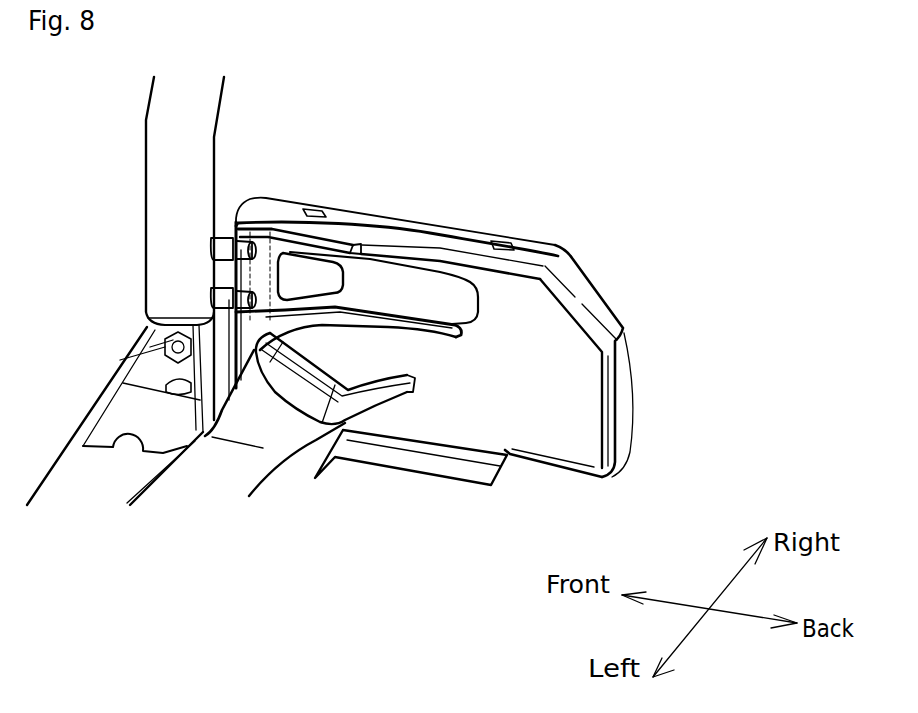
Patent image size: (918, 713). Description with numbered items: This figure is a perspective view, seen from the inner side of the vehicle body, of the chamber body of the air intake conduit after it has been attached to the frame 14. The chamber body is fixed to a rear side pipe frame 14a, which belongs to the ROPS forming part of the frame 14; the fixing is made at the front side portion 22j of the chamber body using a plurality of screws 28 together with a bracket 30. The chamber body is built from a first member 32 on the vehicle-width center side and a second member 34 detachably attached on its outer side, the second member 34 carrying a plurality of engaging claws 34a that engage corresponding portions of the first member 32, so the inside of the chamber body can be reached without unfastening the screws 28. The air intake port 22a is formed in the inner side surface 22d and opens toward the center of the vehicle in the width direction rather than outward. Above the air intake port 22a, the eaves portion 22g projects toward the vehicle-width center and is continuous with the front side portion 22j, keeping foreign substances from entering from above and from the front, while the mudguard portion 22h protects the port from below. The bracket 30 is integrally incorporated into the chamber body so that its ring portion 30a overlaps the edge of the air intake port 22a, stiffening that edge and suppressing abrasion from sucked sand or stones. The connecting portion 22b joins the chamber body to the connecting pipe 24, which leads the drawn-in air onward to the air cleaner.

The frame 14 is at (75, 463).
The rear side pipe frame 14a is at (147, 174).
The air intake port 22a is at (328, 288).
The connecting portion 22b is at (275, 392).
The inner side surface 22d is at (553, 448).
The eaves portion 22g is at (272, 212).
The mudguard portion 22h is at (420, 477).
The front side portion 22j is at (230, 226).
The connecting pipe 24 is at (254, 482).
The screws 28 is at (211, 243).
The bracket 30 is at (466, 305).
The ring portion 30a is at (313, 306).
The first member 32 is at (600, 299).
The second member 34 is at (420, 221).
The engaging claws 34a is at (323, 193).